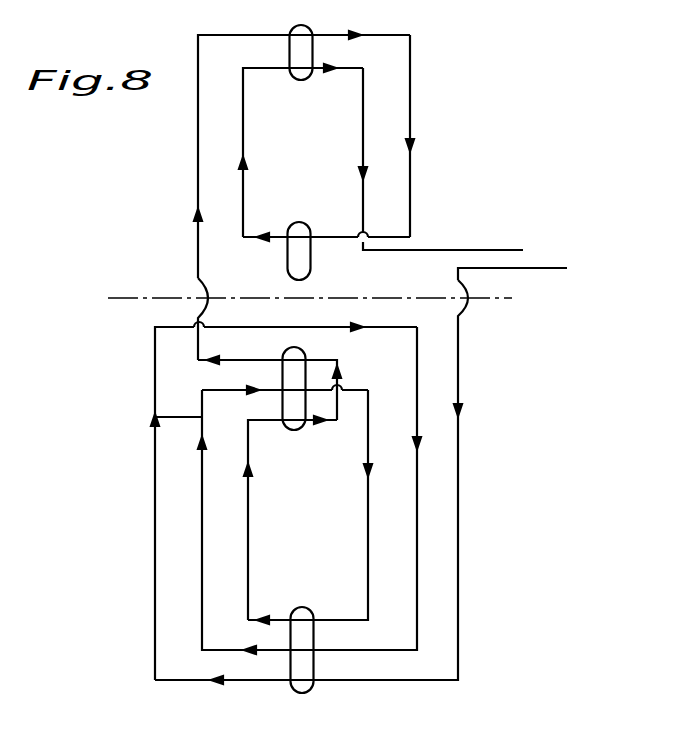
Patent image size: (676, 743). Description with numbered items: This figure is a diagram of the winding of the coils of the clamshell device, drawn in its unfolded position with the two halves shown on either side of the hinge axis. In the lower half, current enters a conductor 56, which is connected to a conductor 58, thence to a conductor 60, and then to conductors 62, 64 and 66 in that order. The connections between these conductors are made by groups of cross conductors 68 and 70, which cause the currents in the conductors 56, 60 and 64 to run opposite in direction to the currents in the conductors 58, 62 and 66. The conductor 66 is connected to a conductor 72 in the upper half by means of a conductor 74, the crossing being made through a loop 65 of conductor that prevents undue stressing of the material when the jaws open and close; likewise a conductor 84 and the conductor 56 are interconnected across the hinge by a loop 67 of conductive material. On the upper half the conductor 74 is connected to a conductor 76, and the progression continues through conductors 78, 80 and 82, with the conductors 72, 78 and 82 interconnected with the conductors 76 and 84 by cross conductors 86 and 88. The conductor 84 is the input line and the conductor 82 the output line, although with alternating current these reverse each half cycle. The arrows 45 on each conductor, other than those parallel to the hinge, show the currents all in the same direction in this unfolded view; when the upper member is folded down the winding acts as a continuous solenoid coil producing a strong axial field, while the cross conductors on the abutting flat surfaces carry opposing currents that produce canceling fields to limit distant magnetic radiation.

The arrows 45 is at (205, 217).
The conductor 56 is at (459, 560).
The conductor 58 is at (155, 500).
The conductor 60 is at (417, 542).
The conductor 62 is at (202, 548).
The conductor 64 is at (369, 521).
The loop 65 is at (213, 288).
The conductor 66 is at (248, 562).
The loop 67 is at (468, 312).
The cross conductors 68 is at (310, 688).
The cross conductors 70 is at (296, 430).
The conductor 72 is at (199, 100).
The conductor 74 is at (238, 365).
The conductor 76 is at (409, 92).
The conductor 78 is at (243, 137).
The conductor 80 is at (363, 132).
The conductor 82 is at (500, 250).
The conductor 84 is at (537, 268).
The cross conductors 86 is at (304, 223).
The cross conductors 88 is at (304, 78).